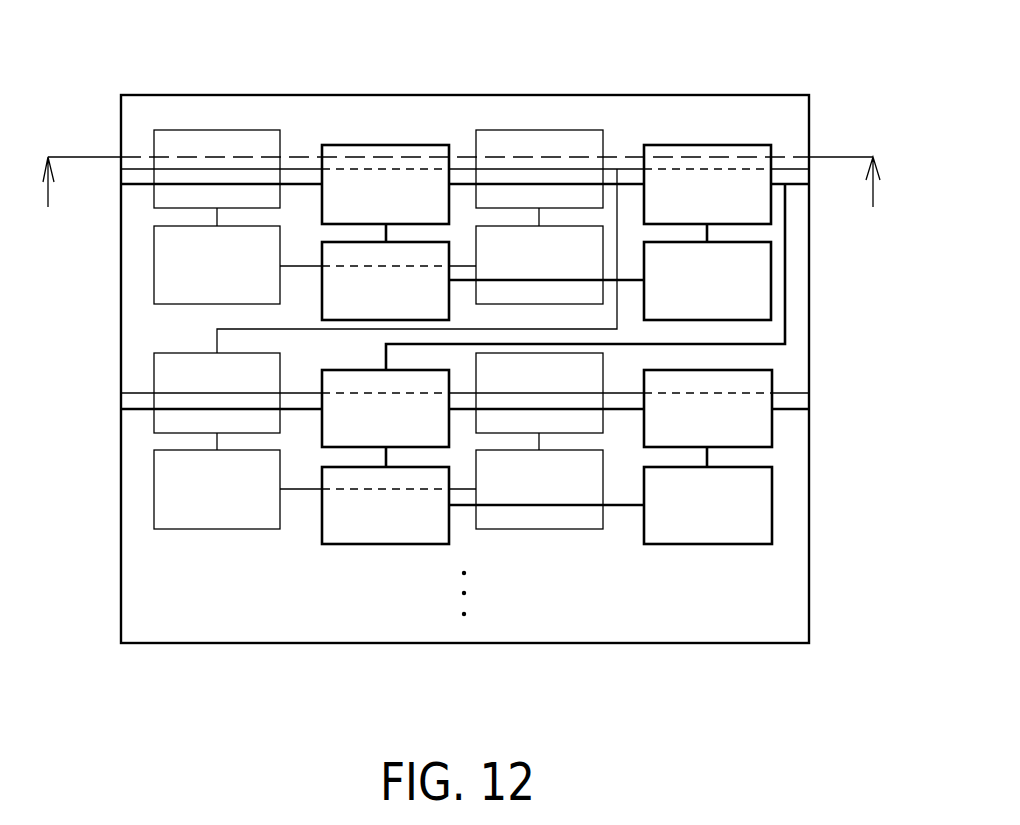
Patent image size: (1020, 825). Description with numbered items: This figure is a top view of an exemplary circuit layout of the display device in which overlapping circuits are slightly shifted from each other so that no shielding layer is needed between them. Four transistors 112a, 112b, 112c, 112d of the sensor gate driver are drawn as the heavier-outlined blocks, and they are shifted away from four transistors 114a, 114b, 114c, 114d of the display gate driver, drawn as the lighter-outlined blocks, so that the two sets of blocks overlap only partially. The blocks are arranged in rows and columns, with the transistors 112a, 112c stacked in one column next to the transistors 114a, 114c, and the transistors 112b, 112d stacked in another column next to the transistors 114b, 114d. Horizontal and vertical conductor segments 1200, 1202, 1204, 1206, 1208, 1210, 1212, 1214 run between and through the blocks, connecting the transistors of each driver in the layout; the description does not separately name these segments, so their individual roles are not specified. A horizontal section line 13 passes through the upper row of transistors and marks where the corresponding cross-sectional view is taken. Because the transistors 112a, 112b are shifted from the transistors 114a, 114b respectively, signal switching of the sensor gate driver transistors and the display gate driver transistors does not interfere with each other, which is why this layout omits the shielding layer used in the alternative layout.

The line 13-13' 13 is at (462, 199).
The transistor 114a is at (189, 128).
The transistor 114c is at (248, 227).
The transistor 112a is at (358, 143).
The transistor 112c is at (417, 240).
The transistor 114b is at (512, 128).
The transistor 114d is at (572, 227).
The transistor 112b is at (680, 145).
The transistor 112d is at (740, 242).
The first conductive line 1200 is at (303, 168).
The second conductive line 1202 is at (463, 168).
The interconnect line 1204 is at (305, 267).
The connecting via 1206 is at (385, 455).
The conductive path 1208 is at (785, 350).
The conductive line 1210 is at (632, 508).
The conductive line 1212 is at (620, 410).
The connecting via 1214 is at (710, 456).